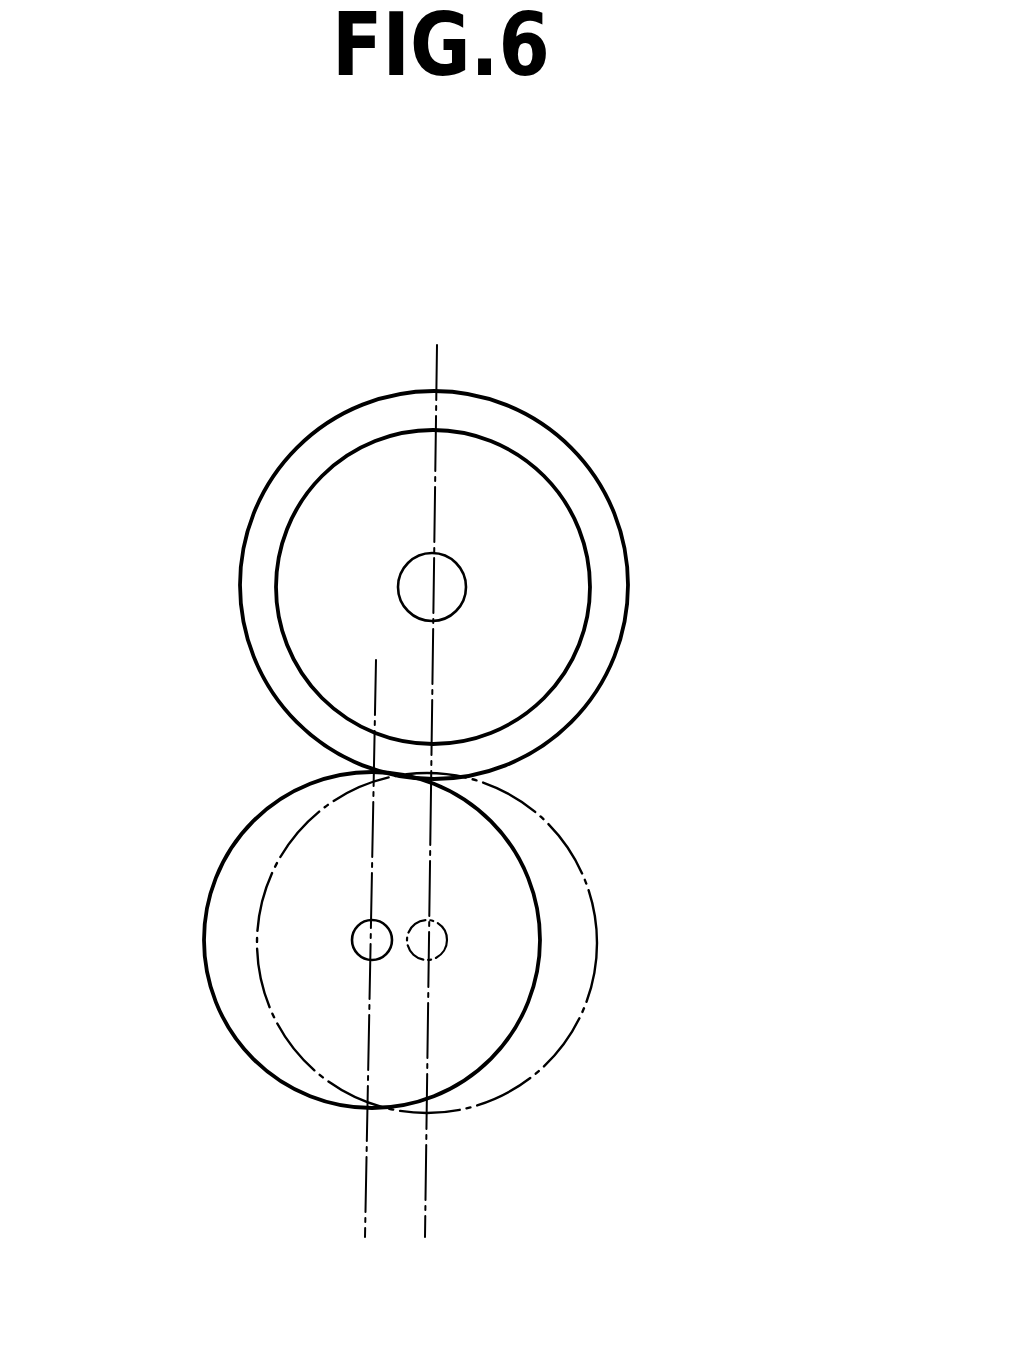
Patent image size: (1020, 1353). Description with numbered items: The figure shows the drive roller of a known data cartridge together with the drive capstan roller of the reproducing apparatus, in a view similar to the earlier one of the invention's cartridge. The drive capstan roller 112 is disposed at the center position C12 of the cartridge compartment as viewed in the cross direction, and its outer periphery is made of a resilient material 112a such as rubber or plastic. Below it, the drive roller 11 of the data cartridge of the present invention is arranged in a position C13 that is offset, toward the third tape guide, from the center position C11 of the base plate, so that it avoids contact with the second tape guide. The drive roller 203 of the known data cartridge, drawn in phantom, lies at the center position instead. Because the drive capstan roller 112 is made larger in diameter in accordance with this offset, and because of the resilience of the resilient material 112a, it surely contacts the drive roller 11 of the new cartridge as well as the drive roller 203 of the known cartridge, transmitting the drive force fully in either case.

The drive roller 11 is at (243, 1017).
The drive capstan roller 112 is at (615, 487).
The resilient material 112a is at (603, 650).
The drive roller 203 is at (575, 1033).
The center position C11 is at (423, 1201).
The center position C12 is at (437, 365).
The position C13 is at (364, 1204).